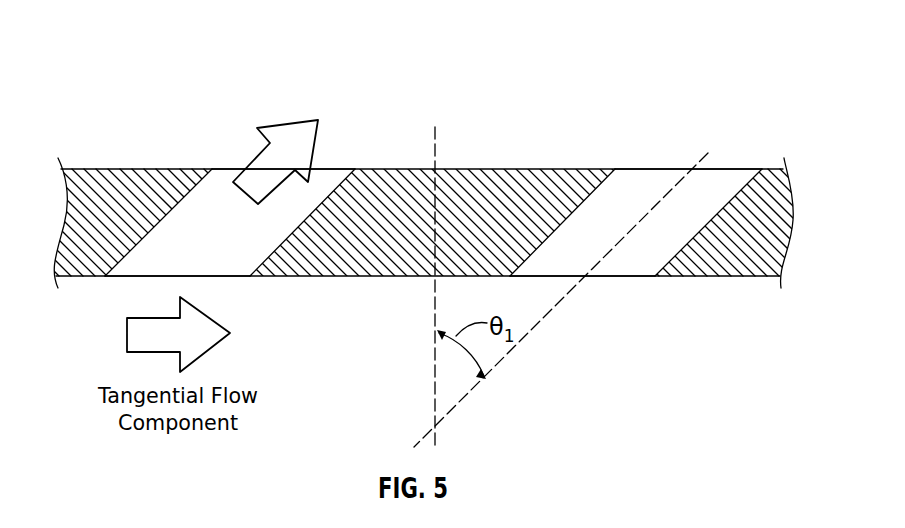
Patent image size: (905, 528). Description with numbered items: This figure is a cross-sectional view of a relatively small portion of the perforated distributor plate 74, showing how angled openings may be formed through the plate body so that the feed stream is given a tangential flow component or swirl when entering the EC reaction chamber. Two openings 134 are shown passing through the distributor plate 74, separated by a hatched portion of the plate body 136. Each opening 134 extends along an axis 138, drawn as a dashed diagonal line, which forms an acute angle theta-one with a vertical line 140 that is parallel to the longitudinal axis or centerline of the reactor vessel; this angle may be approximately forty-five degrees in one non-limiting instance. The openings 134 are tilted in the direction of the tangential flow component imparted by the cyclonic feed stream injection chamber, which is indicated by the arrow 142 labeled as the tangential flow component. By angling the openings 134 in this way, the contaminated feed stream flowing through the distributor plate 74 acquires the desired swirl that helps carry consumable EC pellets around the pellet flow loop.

The perforated distributor plate 74 is at (86, 115).
The openings 134 is at (244, 233).
The second portion 136 is at (395, 233).
The axis 138 is at (699, 164).
The vertical line 140 is at (433, 300).
The arrow 142 is at (147, 320).